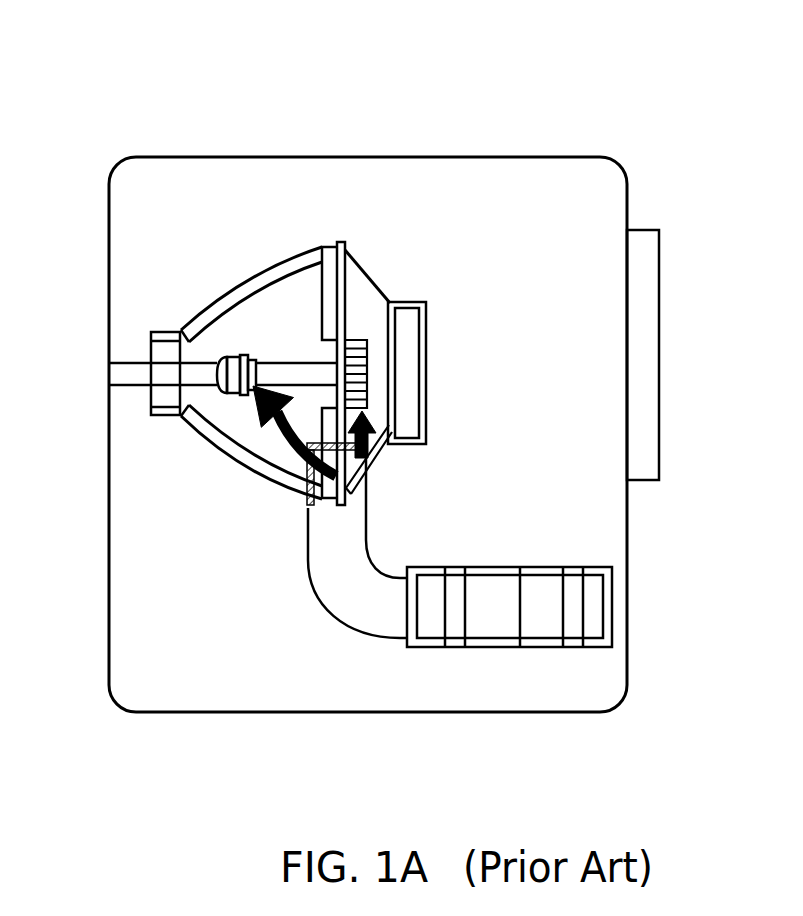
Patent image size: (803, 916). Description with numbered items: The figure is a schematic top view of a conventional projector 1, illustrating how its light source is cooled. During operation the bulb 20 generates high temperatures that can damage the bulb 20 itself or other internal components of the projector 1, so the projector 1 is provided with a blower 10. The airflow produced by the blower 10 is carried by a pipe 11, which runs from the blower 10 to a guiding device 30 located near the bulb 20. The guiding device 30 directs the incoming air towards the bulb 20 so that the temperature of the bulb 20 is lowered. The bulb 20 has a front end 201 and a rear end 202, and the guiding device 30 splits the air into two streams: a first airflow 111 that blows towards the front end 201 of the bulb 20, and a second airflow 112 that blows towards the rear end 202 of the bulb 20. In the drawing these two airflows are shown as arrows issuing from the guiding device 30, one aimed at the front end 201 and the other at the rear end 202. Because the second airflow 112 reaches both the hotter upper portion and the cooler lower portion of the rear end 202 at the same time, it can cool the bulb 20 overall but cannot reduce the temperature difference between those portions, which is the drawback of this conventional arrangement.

The conventional projector 1 is at (350, 38).
The bulb 20 is at (272, 350).
The front end 201 is at (355, 367).
The rear end 202 is at (202, 370).
The first airflow 111 is at (372, 447).
The second airflow 112 is at (290, 432).
The guiding device 30 is at (307, 485).
The pipe 11 is at (351, 617).
The blower 10 is at (482, 628).